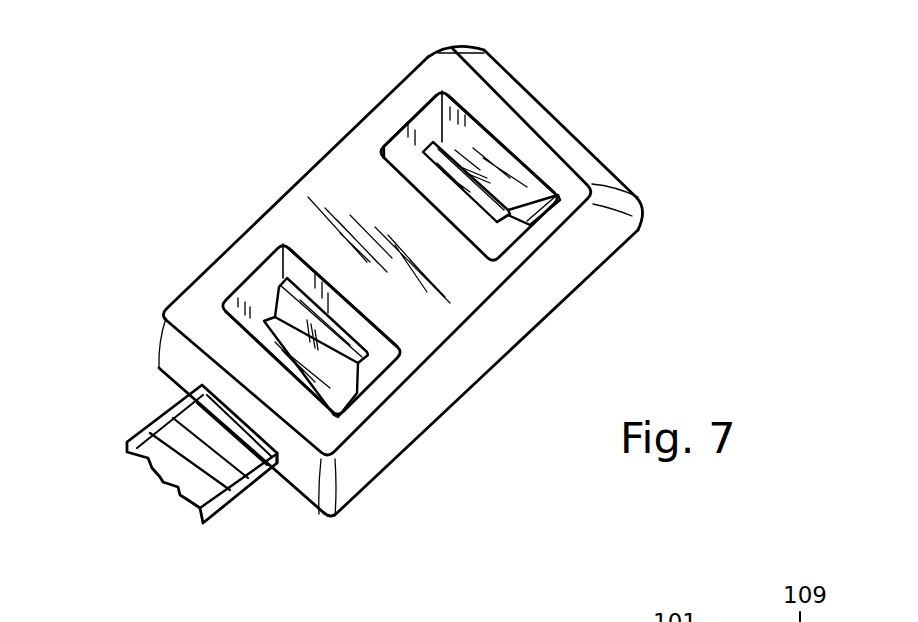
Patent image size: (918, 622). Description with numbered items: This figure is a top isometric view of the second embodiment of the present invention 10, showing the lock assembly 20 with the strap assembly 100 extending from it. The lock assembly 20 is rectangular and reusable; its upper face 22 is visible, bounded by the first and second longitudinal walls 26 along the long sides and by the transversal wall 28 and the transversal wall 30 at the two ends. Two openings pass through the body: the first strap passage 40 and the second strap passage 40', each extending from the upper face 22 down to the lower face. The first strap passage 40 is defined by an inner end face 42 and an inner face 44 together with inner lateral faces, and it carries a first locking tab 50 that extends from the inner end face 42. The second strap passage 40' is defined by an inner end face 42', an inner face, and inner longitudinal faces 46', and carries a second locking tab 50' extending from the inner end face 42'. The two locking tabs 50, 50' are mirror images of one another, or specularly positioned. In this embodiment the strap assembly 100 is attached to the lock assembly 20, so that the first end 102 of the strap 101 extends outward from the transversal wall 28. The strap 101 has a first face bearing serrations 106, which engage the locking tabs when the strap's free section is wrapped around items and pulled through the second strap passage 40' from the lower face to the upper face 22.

The present invention 10 is at (150, 88).
The lock assembly 20 is at (308, 150).
The upper face 22 is at (457, 270).
The first and second longitudinal walls 26 is at (450, 368).
The transversal wall 28 is at (181, 360).
The transversal wall 30 is at (530, 120).
The first strap passage 40 is at (238, 295).
The second strap passage 40' is at (497, 139).
The inner end face 42 is at (204, 352).
The inner end face 42' is at (504, 106).
The inner face 44 is at (302, 270).
The inner longitudinal faces 46' is at (360, 91).
The first locking tab 50 is at (243, 295).
The second locking tab 50' is at (566, 169).
The strap assembly 100 is at (168, 502).
The strap 101 is at (155, 421).
The first end 102 is at (272, 458).
The serrations 106 is at (196, 473).